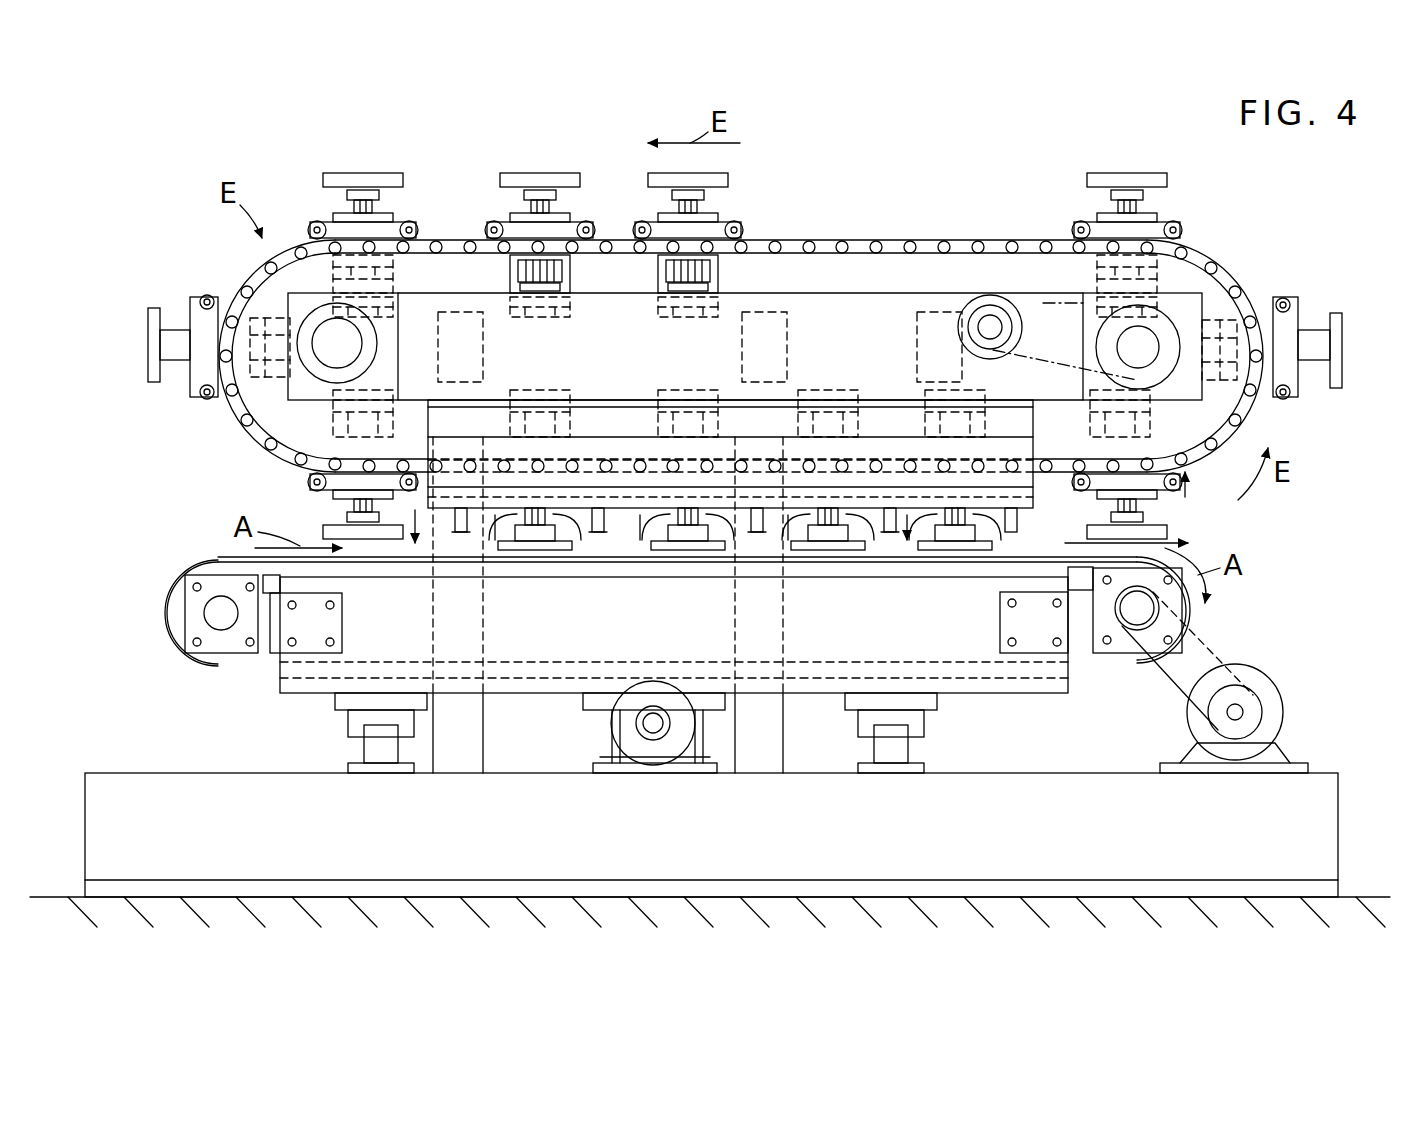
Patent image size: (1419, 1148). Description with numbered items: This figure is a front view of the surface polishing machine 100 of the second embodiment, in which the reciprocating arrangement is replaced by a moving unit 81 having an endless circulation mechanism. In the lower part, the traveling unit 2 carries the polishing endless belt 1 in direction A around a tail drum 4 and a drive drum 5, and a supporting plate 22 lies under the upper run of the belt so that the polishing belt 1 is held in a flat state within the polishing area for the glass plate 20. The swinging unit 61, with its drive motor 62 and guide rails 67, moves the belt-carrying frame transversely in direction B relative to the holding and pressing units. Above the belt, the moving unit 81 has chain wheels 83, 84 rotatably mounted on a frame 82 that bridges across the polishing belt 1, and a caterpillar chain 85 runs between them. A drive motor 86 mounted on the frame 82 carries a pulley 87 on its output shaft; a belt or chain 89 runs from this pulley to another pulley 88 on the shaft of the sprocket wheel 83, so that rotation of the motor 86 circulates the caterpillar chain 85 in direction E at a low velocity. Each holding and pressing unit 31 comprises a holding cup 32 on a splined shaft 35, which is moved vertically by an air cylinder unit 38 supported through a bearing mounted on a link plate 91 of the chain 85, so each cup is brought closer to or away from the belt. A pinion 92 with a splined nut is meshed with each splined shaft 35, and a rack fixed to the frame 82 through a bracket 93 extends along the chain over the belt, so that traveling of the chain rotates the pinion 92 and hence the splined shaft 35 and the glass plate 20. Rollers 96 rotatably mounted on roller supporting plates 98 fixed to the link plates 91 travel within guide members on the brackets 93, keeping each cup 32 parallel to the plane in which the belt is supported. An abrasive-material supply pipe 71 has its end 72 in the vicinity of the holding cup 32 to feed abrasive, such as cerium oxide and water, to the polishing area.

The polishing endless belt 1 is at (222, 558).
The traveling unit 2 is at (1225, 648).
The tail drum 4 is at (185, 625).
The drive drum 5 is at (1130, 658).
The glass plate 20 is at (490, 565).
The supporting plate 22 is at (260, 665).
The holding and pressing unit 31 is at (378, 168).
The holding cup 32 is at (363, 173).
The splined shaft 35 is at (190, 330).
The air cylinder unit 38 is at (335, 430).
The swinging unit 61 is at (600, 745).
The drive motor 62 is at (680, 755).
The guide rails 67 is at (380, 770).
The abrasive-material supply pipe 71 is at (460, 532).
The end of abrasive-material supply pipe 72 is at (1017, 525).
The moving unit 81 is at (1262, 285).
The frame 82 is at (462, 312).
The chain wheel 83 is at (1210, 280).
The chain wheel 84 is at (300, 270).
The caterpillar chain 85 is at (850, 240).
The drive motor 86 is at (975, 296).
The pulley 87 is at (992, 318).
The pulley 88 is at (1162, 320).
The belt or chain 89 is at (1045, 300).
The link plate 91 is at (552, 215).
The pinion 92 is at (720, 270).
The bracket 93 is at (608, 420).
The roller 96 is at (586, 222).
The roller supporting plate 98 is at (395, 225).
The surface polishing machine 100 is at (1028, 172).